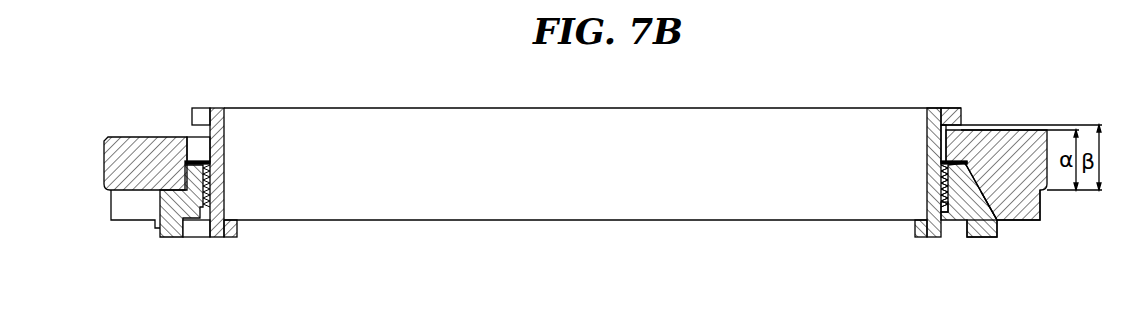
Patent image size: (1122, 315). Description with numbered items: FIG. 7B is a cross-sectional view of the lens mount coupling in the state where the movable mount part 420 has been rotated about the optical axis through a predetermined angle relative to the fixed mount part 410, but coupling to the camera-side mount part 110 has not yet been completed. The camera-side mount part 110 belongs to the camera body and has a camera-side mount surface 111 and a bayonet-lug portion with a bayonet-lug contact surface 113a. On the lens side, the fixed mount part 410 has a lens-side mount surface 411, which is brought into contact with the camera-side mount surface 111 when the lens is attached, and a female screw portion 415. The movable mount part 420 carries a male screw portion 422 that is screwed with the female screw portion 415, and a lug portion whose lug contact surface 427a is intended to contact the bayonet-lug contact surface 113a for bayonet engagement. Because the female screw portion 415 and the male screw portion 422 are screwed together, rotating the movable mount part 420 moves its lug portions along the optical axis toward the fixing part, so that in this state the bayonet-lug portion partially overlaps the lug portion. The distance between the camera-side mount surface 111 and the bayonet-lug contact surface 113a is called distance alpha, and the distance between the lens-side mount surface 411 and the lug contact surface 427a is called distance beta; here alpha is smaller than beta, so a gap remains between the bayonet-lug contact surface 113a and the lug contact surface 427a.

The camera-side mount part 110 is at (1030, 138).
The camera-side mount surface 111 is at (1040, 204).
The bayonet-lug contact surface 113a is at (955, 127).
The fixed mount part 410 is at (979, 223).
The lens-side mount surface 411 is at (1000, 190).
The female screw portion 415 is at (945, 180).
The movable mount part 420 is at (932, 212).
The male screw portion 422 is at (945, 180).
The lug contact surface 427a is at (935, 117).